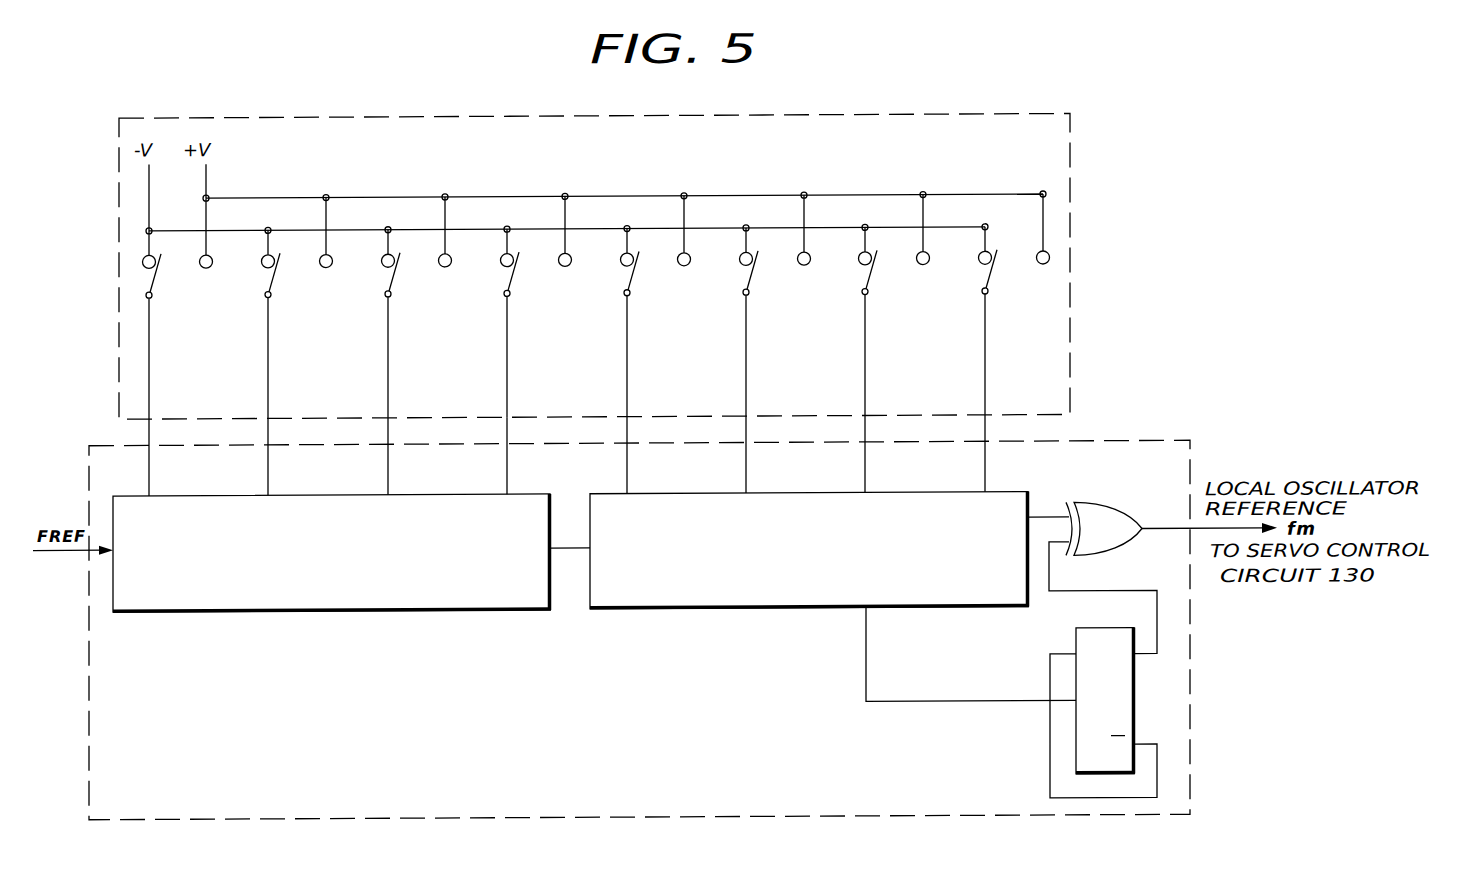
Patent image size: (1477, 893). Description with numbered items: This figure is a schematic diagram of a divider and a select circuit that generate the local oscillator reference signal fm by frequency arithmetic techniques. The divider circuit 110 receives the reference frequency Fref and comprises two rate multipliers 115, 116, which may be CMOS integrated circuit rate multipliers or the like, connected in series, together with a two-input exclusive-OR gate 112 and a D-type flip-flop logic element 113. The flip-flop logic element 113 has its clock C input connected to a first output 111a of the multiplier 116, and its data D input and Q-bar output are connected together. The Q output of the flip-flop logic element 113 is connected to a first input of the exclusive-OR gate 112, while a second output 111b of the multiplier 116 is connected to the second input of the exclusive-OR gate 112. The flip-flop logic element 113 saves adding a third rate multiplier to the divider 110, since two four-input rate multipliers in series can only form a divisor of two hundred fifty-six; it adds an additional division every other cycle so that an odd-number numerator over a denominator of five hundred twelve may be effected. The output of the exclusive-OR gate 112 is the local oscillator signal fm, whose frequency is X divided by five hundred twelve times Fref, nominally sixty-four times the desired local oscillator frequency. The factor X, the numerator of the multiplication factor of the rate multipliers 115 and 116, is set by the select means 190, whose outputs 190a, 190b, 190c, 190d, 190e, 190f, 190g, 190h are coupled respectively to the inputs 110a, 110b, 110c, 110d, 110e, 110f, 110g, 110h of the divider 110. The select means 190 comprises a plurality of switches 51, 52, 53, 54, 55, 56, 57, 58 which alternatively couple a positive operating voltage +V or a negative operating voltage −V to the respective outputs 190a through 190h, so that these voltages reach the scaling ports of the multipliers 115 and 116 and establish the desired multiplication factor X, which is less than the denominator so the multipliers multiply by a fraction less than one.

The select means 190 is at (490, 112).
The switch S1 51 is at (206, 244).
The switch S2 52 is at (326, 244).
The switch S3 53 is at (445, 243).
The switch S4 54 is at (565, 242).
The switch S5 55 is at (684, 242).
The switch S6 56 is at (804, 241).
The switch S7 57 is at (923, 241).
The switch S8 58 is at (1043, 240).
The select means output 190a is at (151, 395).
The select means output 190b is at (270, 395).
The select means output 190c is at (390, 395).
The select means output 190d is at (509, 395).
The select means output 190e is at (629, 395).
The select means output 190f is at (748, 395).
The select means output 190g is at (867, 395).
The select means output 190h is at (987, 395).
The divider circuit 110 is at (1122, 443).
The divider input 110a is at (151, 466).
The divider input 110b is at (270, 466).
The divider input 110c is at (390, 466).
The divider input 110d is at (509, 466).
The divider input 110e is at (629, 466).
The divider input 110f is at (748, 466).
The divider input 110g is at (867, 466).
The divider input 110h is at (987, 466).
The multiplier 115 is at (440, 611).
The multiplier 116 is at (962, 610).
The first output of multiplier 116 111a is at (866, 664).
The second output of multiplier 116 111b is at (1042, 513).
The exclusive-OR gate 112 is at (1124, 508).
The D-type flip-flop logic element 113 is at (1134, 703).